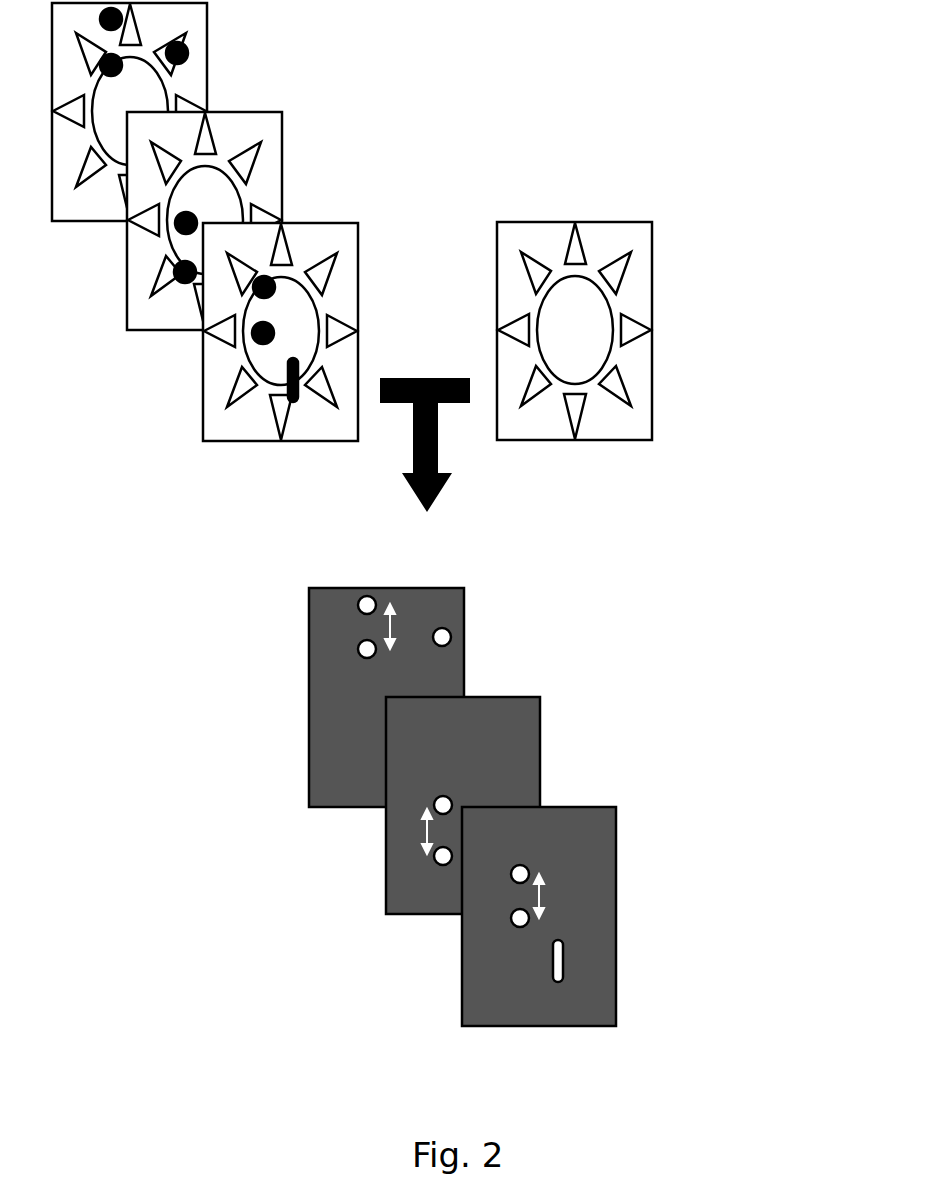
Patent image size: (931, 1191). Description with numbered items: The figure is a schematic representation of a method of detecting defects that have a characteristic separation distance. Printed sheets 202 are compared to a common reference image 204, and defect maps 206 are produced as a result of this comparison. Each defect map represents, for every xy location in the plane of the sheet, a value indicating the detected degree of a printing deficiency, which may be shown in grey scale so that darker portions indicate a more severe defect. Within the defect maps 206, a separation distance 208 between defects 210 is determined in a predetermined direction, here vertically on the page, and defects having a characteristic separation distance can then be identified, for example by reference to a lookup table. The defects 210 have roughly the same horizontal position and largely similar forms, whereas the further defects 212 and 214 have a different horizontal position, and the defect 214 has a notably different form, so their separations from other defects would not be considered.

The sheets 202 is at (127, 291).
The common reference image 204 is at (652, 331).
The defect maps 206 is at (385, 877).
The separation distance 208 is at (405, 625).
The defects 210 is at (358, 607).
The further defect 212 is at (452, 640).
The further defect 214 is at (563, 967).